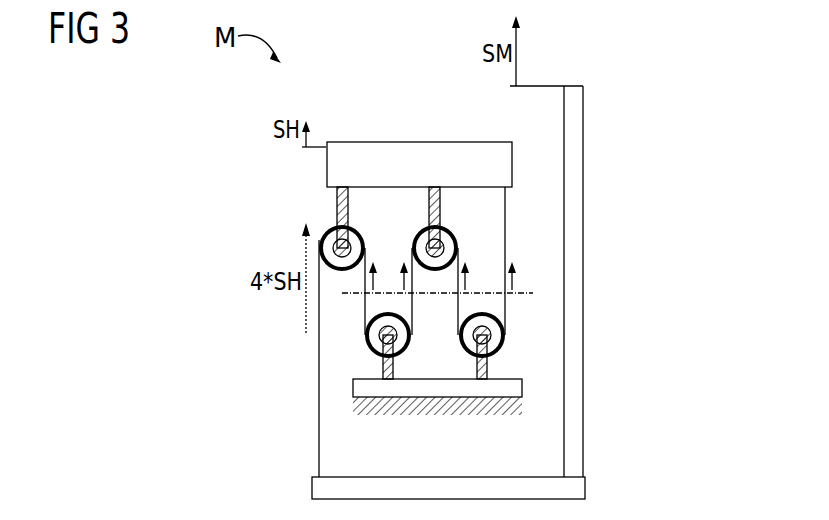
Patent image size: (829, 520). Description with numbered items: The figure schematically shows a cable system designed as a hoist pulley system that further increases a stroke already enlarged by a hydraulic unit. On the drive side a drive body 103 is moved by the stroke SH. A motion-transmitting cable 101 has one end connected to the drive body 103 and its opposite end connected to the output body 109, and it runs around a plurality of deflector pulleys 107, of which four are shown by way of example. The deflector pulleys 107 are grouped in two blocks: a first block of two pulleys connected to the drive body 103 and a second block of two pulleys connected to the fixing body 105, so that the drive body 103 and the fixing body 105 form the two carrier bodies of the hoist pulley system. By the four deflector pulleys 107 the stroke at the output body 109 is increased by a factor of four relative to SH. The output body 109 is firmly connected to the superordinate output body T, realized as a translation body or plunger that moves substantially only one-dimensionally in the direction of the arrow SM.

The motion-transmitting cable 101 is at (318, 366).
The drive body 103 is at (424, 150).
The fixing body 105 is at (515, 390).
The deflector pulleys 107 is at (353, 238).
The output body 109 is at (424, 486).
The superordinate output body T is at (578, 248).